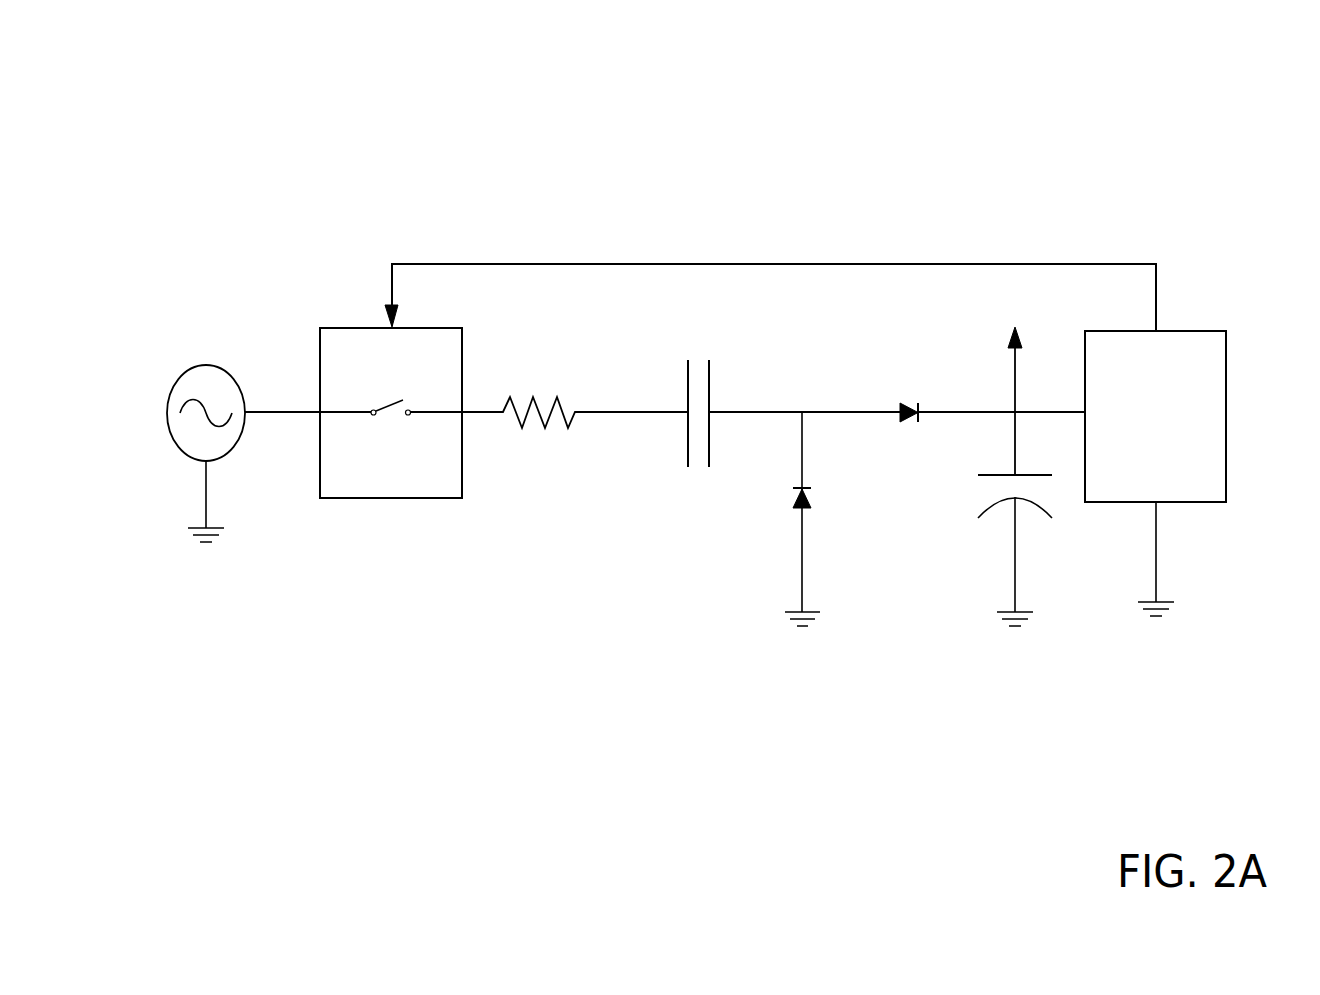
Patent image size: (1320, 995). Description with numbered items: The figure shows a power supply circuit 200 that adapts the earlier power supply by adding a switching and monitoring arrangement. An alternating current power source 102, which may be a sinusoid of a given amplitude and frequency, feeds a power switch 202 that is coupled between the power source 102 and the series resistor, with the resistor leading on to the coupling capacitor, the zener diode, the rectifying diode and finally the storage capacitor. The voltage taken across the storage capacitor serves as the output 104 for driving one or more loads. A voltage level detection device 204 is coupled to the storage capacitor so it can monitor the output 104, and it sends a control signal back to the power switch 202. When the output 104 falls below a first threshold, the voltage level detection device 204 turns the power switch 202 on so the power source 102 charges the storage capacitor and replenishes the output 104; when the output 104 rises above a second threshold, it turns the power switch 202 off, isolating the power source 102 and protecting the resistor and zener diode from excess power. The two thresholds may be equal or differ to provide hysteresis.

The power supply circuit 200 is at (650, 117).
The power source 102 is at (210, 363).
The power switch 202 is at (327, 327).
The voltage level detection device 204 is at (1197, 330).
The output 104 is at (1021, 351).